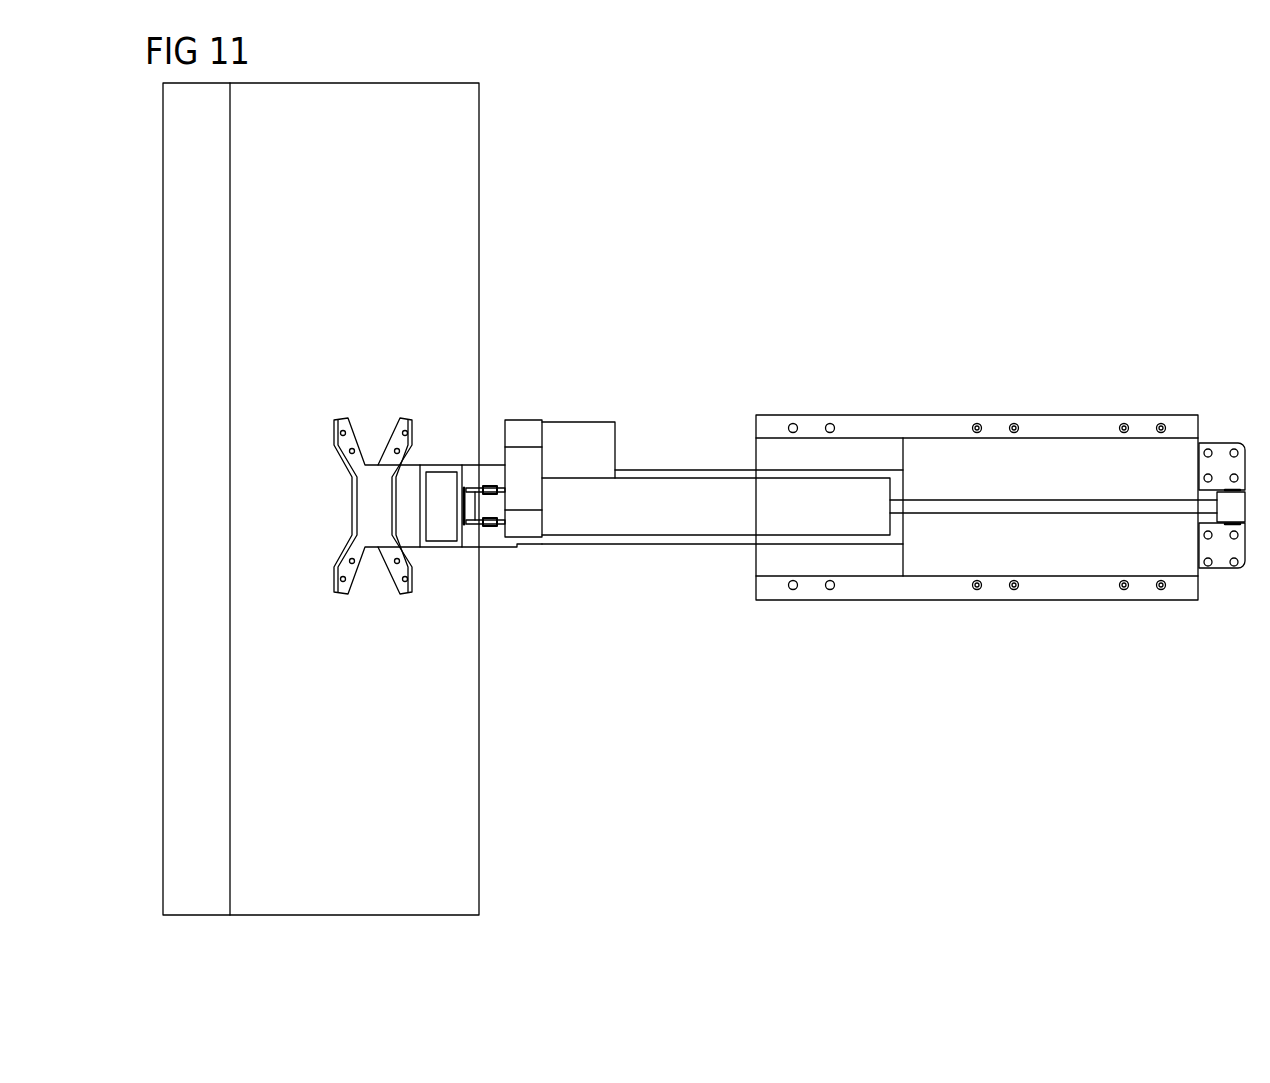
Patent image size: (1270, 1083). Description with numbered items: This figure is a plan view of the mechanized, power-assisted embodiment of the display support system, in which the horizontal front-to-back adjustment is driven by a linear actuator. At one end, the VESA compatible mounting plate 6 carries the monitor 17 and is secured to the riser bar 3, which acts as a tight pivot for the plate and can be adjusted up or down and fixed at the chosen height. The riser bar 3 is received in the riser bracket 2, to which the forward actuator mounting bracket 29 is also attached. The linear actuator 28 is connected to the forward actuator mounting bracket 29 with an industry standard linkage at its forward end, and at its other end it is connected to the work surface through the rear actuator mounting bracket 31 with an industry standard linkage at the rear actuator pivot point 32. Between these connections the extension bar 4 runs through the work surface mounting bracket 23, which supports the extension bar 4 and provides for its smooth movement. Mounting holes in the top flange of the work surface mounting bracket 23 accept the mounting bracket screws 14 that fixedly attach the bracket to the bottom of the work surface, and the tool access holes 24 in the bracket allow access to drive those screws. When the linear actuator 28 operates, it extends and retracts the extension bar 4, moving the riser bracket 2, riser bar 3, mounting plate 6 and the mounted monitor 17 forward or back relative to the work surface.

The monitor 17 is at (354, 499).
The mounting plate 6 is at (350, 507).
The riser bar 3 is at (441, 544).
The riser bracket 2 is at (502, 539).
The forward actuator mounting bracket 29 is at (508, 419).
The linear actuator 28 is at (563, 448).
The extension bar 4 is at (879, 551).
The work surface mounting bracket 23 is at (977, 541).
The tool access holes 24 is at (845, 555).
The mounting bracket screws 14 is at (1069, 534).
The rear actuator pivot point 32 is at (1222, 579).
The rear actuator mounting bracket 31 is at (1235, 587).